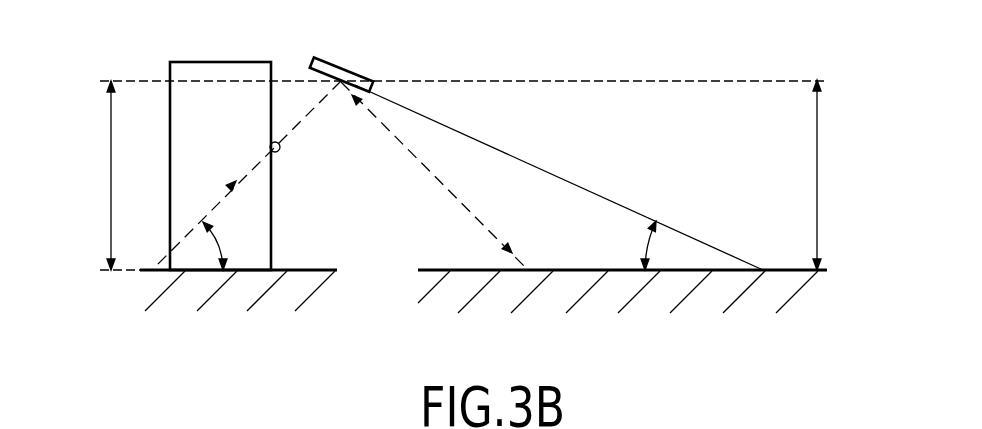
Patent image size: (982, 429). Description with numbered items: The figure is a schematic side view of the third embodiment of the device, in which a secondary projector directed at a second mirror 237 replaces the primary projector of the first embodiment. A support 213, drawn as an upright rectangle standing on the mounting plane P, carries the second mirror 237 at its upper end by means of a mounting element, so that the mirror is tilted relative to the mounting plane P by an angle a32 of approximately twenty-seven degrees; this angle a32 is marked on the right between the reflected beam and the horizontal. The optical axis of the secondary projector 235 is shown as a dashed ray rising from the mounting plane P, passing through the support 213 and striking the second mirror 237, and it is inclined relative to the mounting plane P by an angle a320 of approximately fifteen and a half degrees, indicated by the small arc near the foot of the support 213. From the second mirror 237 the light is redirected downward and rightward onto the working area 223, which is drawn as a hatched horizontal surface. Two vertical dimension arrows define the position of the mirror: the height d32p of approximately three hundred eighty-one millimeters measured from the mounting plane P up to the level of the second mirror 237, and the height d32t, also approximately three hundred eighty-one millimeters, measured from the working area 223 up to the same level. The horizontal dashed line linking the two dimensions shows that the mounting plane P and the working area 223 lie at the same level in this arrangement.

The support 213 is at (215, 72).
The second mirror 237 is at (347, 68).
The optical axis of the secondary projector 235 is at (279, 151).
The working area 223 is at (563, 273).
The mounting plane P is at (203, 272).
The height relative to the mounting plane d32p is at (82, 175).
The height relative to the working area d32t is at (843, 175).
The inclination angle of the optical axis a320 is at (216, 235).
The inclination angle of the second mirror a32 is at (628, 245).